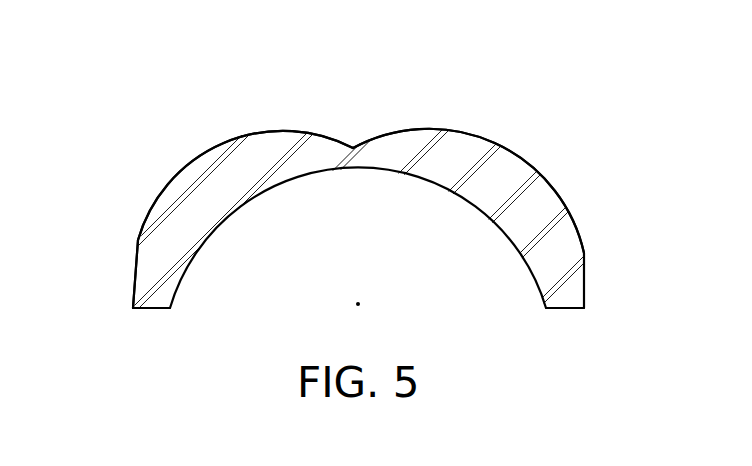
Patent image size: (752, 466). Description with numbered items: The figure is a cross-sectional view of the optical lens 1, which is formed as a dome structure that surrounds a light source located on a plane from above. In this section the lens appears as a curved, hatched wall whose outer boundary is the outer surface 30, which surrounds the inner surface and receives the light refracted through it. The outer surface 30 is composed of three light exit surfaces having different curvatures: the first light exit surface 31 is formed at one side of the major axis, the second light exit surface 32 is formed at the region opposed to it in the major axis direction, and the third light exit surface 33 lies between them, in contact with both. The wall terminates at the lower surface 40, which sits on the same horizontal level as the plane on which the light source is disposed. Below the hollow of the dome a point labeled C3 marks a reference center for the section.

The optical lens 1 is at (582, 20).
The outer surface 30 is at (513, 155).
The first light exit surface 31 is at (240, 138).
The second light exit surface 32 is at (580, 243).
The third light exit surface 33 is at (137, 253).
The lower surface 40 is at (584, 308).
The center point C3 is at (355, 320).